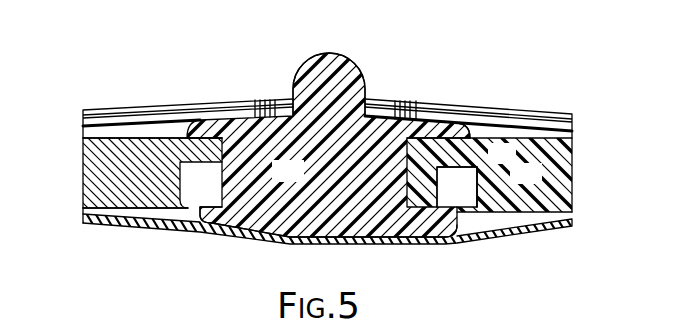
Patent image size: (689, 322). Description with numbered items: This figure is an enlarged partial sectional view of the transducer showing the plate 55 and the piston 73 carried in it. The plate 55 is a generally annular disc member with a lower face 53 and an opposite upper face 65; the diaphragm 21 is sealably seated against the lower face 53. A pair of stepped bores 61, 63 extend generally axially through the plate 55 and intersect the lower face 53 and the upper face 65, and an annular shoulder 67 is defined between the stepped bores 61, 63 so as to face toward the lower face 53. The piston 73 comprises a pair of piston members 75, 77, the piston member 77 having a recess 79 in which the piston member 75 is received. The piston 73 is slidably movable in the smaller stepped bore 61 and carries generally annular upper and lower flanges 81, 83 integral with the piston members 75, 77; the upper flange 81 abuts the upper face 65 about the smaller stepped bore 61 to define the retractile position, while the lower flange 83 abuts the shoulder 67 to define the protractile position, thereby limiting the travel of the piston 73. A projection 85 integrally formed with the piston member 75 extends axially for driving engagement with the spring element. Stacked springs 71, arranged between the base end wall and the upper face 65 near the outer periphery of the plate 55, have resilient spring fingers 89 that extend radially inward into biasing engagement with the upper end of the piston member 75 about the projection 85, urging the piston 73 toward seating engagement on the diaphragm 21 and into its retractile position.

The diaphragm 21 is at (532, 234).
The lower face 53 is at (86, 189).
The plate 55 is at (86, 167).
The smaller stepped bore 61 is at (450, 146).
The stepped bore 63 is at (474, 200).
The upper face 65 is at (86, 153).
The shoulder 67 is at (478, 168).
The stacked springs 71 is at (562, 93).
The piston 73 is at (231, 248).
The piston member 75 is at (266, 100).
The piston member 77 is at (210, 228).
The recess 79 is at (262, 181).
The upper flange 81 is at (470, 128).
The lower flange 83 is at (467, 235).
The projection 85 is at (343, 63).
The spring fingers 89 is at (419, 107).